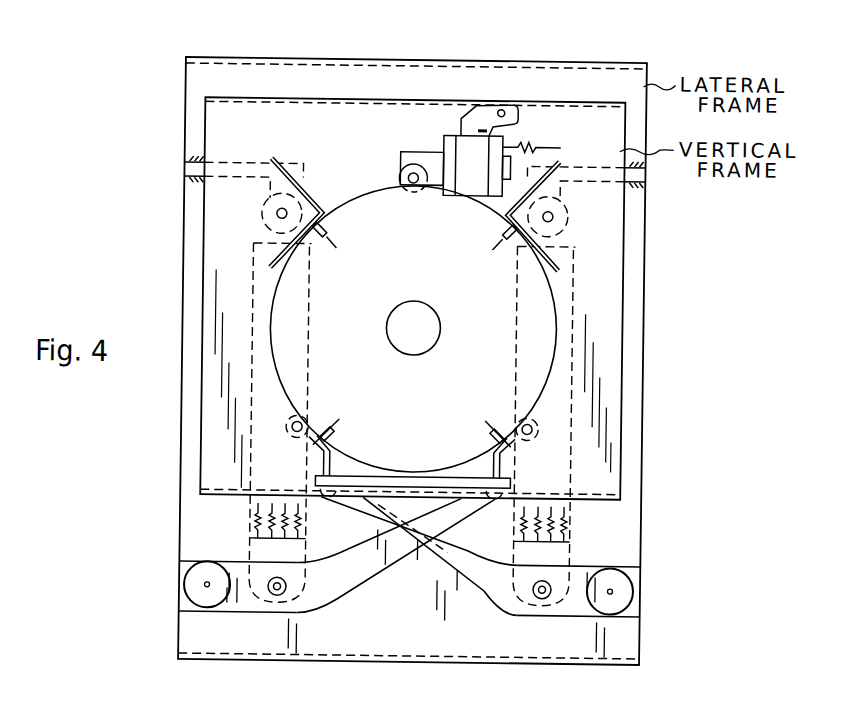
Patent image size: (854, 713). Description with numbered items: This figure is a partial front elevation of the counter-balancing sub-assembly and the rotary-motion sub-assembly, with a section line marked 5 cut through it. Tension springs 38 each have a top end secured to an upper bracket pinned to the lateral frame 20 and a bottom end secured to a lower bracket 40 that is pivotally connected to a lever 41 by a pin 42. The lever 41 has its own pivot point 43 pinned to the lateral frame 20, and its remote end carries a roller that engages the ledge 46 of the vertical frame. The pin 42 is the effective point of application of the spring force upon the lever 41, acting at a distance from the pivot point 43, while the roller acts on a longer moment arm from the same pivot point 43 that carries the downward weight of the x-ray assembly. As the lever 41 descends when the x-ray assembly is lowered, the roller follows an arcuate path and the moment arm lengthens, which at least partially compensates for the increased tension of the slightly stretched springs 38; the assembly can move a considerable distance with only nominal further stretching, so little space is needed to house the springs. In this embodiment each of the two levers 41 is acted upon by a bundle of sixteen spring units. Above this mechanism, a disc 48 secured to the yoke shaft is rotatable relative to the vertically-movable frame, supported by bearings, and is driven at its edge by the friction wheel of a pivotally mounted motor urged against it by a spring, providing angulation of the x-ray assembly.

The disc 48 is at (425, 273).
The ledge 46 is at (400, 478).
The lower bracket 40 is at (572, 554).
The tension springs 38 is at (576, 473).
The lateral frame 20 is at (625, 642).
The lever 41 is at (343, 589).
The pivot point 43 is at (615, 590).
The pin 42 is at (273, 601).
The section line 5- 5 is at (363, 20).